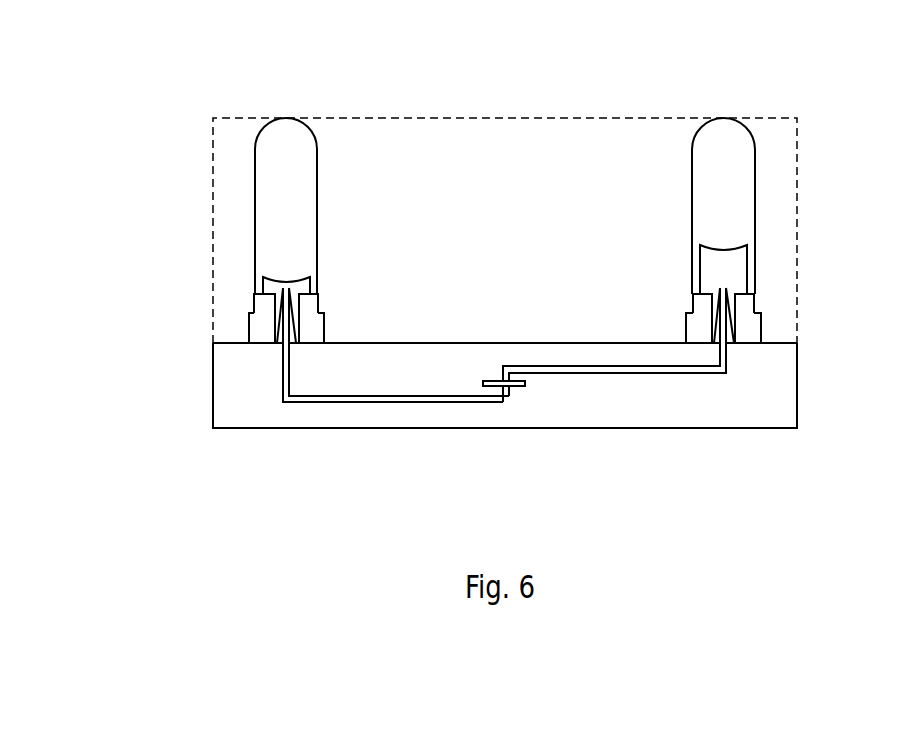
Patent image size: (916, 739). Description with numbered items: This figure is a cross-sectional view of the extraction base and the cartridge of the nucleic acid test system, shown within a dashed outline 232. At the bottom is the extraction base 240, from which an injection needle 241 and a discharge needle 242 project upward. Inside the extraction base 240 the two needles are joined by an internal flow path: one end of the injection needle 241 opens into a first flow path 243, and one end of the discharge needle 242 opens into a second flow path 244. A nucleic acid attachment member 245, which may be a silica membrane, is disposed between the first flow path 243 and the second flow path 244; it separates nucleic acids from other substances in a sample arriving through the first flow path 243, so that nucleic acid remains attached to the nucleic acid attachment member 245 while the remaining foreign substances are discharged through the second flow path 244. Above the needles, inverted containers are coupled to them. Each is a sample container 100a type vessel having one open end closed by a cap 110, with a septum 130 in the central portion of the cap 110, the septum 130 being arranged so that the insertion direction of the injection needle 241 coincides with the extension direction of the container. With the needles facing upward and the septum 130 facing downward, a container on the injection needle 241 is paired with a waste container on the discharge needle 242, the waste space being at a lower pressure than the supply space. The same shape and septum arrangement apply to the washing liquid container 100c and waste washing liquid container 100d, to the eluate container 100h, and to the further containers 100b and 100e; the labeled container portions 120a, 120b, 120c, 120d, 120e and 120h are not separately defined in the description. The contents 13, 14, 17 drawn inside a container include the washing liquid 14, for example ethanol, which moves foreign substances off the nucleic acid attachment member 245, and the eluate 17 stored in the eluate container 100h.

The sample container 100a is at (781, 164).
The light source 100b is at (238, 164).
The washing liquid container 100c is at (781, 164).
The waste washing liquid container 100d is at (238, 164).
The light source 100e is at (238, 164).
The eluate container 100h is at (781, 164).
The bulb housing 120a is at (797, 186).
The bulb housing 120b is at (212, 185).
The bulb housing 120c is at (797, 186).
The bulb housing 120d is at (212, 185).
The bulb housing 120e is at (212, 185).
The bulb housing 120h is at (755, 200).
The light emitting element 13 is at (796, 267).
The washing liquid 14 is at (796, 267).
The eluate 17 is at (737, 262).
The septum 130 is at (274, 313).
The cap 110 is at (250, 333).
The accommodating region 232 is at (478, 118).
The extraction base 240 is at (690, 408).
The injection needle 241 is at (705, 323).
The discharge needle 242 is at (302, 323).
The first flow path 243 is at (587, 372).
The second flow path 244 is at (377, 402).
The nucleic acid attachment member 245 is at (517, 388).